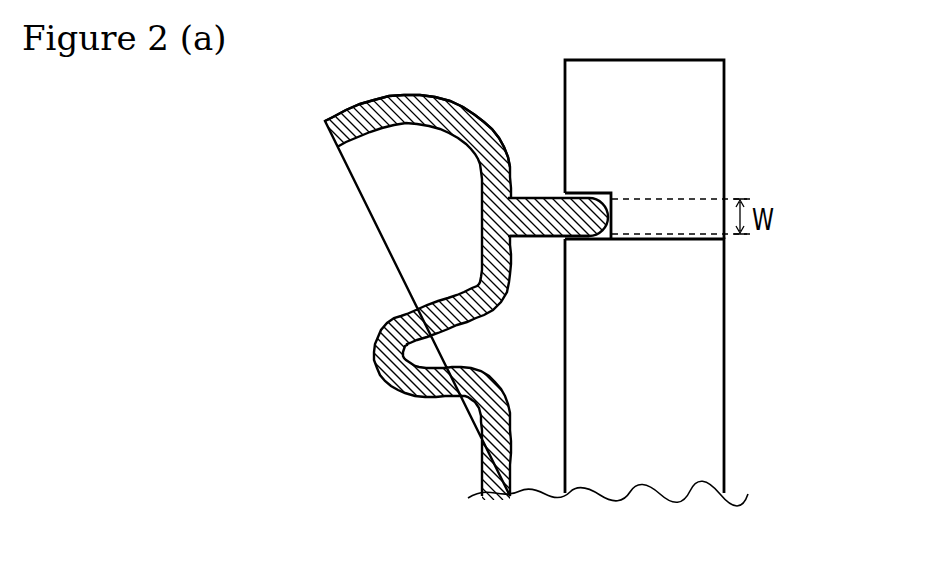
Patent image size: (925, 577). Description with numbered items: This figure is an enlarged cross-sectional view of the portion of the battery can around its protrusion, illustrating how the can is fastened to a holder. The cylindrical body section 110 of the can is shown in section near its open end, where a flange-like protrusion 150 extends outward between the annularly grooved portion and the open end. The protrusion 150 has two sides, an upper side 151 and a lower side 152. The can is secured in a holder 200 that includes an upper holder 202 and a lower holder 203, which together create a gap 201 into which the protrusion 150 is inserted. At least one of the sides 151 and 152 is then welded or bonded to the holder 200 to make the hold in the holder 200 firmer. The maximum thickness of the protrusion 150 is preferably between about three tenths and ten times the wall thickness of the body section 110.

The body section 110 is at (466, 294).
The protrusion 150 is at (522, 197).
The side of protrusion 151 is at (543, 197).
The lower side of protrusion 152 is at (535, 238).
The holder 200 is at (712, 255).
The gap 201 is at (606, 192).
The upper holder 202 is at (705, 170).
The lower holder 203 is at (705, 299).